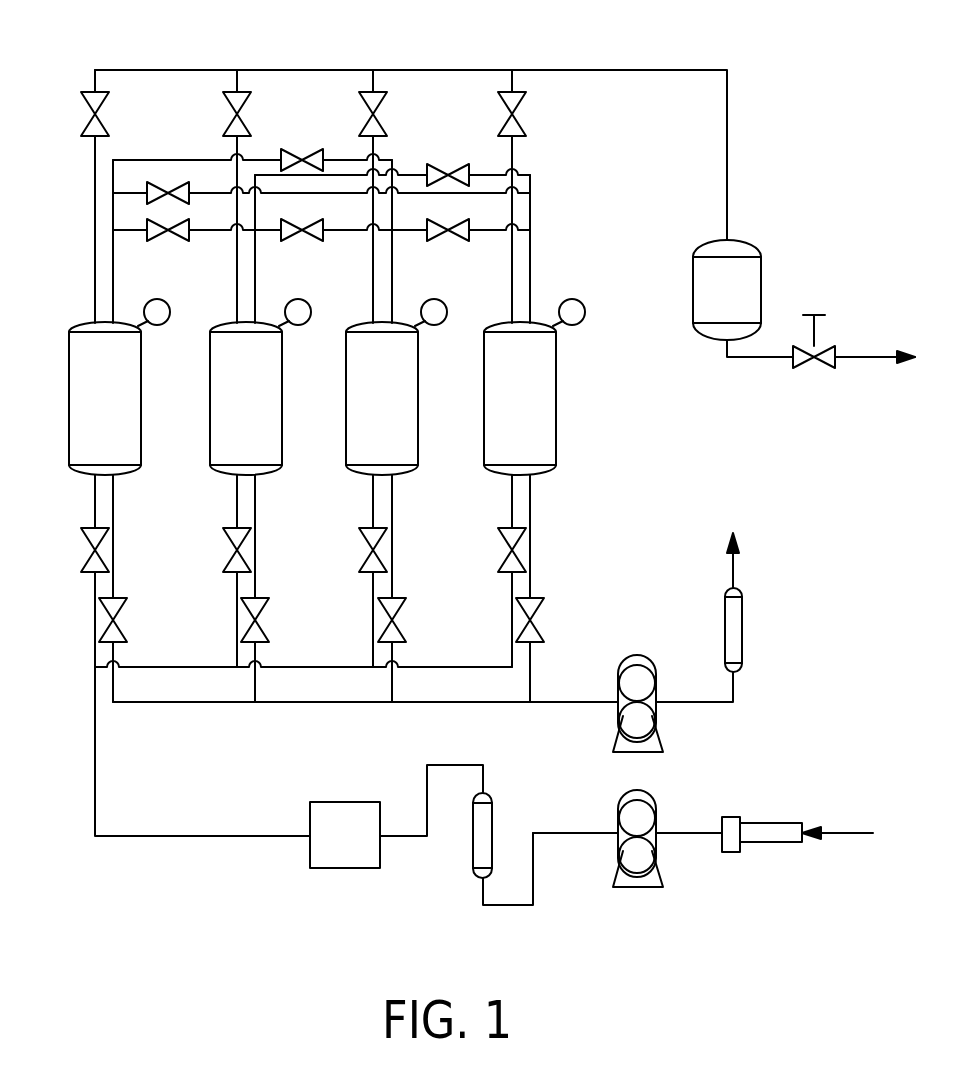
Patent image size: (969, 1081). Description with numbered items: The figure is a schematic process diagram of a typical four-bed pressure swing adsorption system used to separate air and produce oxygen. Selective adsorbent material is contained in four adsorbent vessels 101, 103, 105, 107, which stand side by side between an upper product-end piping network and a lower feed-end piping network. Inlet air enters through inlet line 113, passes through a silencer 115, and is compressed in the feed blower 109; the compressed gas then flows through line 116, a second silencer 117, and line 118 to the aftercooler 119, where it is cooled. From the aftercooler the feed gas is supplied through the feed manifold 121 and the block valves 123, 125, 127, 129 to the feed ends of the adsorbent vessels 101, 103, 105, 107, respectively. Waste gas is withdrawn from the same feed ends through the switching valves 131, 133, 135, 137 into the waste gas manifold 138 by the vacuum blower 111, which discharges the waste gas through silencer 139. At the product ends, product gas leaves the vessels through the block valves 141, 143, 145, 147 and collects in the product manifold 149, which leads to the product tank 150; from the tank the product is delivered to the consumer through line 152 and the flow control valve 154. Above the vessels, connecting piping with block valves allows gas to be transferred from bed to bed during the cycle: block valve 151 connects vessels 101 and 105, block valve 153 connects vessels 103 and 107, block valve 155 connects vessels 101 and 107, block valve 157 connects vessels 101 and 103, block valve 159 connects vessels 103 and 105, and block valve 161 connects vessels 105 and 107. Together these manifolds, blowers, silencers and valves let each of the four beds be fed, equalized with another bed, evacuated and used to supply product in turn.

The adsorbent vessel 101 is at (85, 411).
The adsorbent vessel 103 is at (226, 411).
The adsorbent vessel 105 is at (362, 411).
The adsorbent vessel 107 is at (500, 411).
The feed blower 109 is at (645, 792).
The vacuum blower 111 is at (638, 655).
The inlet line 113 is at (843, 833).
The silencer 115 is at (760, 843).
The line 116 is at (598, 830).
The silencer 117 is at (473, 850).
The line 118 is at (427, 795).
The aftercooler 119 is at (325, 851).
The feed manifold 121 is at (320, 669).
The block valve 123 is at (85, 540).
The block valve 125 is at (228, 545).
The block valve 127 is at (364, 545).
The block valve 129 is at (503, 548).
The switching valve 131 is at (121, 626).
The switching valve 133 is at (263, 626).
The switching valve 135 is at (398, 626).
The switching valve 137 is at (538, 626).
The waste gas manifold 138 is at (455, 704).
The silencer 139 is at (743, 632).
The block valve 141 is at (82, 101).
The block valve 143 is at (227, 105).
The block valve 145 is at (364, 107).
The block valve 147 is at (521, 120).
The product manifold 149 is at (427, 69).
The product tank 150 is at (707, 303).
The block valve 151 is at (314, 118).
The line 152 is at (735, 359).
The block valve 153 is at (456, 165).
The flow control valve 154 is at (808, 371).
The block valve 155 is at (176, 182).
The block valve 157 is at (162, 241).
The block valve 159 is at (297, 241).
The block valve 161 is at (441, 241).